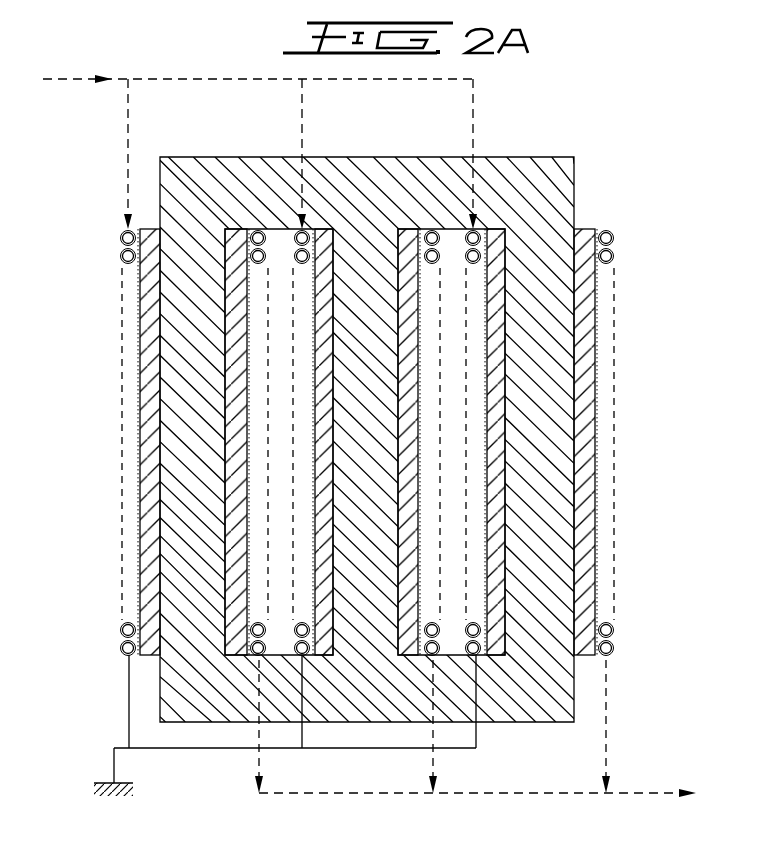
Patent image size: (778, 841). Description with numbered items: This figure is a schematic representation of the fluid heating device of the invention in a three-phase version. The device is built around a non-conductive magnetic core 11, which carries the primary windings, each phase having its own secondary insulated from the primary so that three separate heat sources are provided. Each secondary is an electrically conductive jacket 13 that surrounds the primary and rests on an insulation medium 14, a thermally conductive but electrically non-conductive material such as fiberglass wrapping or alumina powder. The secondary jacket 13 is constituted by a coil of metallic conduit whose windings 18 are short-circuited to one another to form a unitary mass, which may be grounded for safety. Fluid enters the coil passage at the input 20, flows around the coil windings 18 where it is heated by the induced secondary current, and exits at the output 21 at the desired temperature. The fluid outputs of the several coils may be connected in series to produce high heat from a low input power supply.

The non-conductive magnetic core 11 is at (360, 176).
The secondary electrically conductive jacket 13 is at (112, 357).
The insulation medium 14 is at (596, 348).
The windings 18 is at (121, 255).
The input 20 is at (128, 79).
The output 21 is at (620, 793).